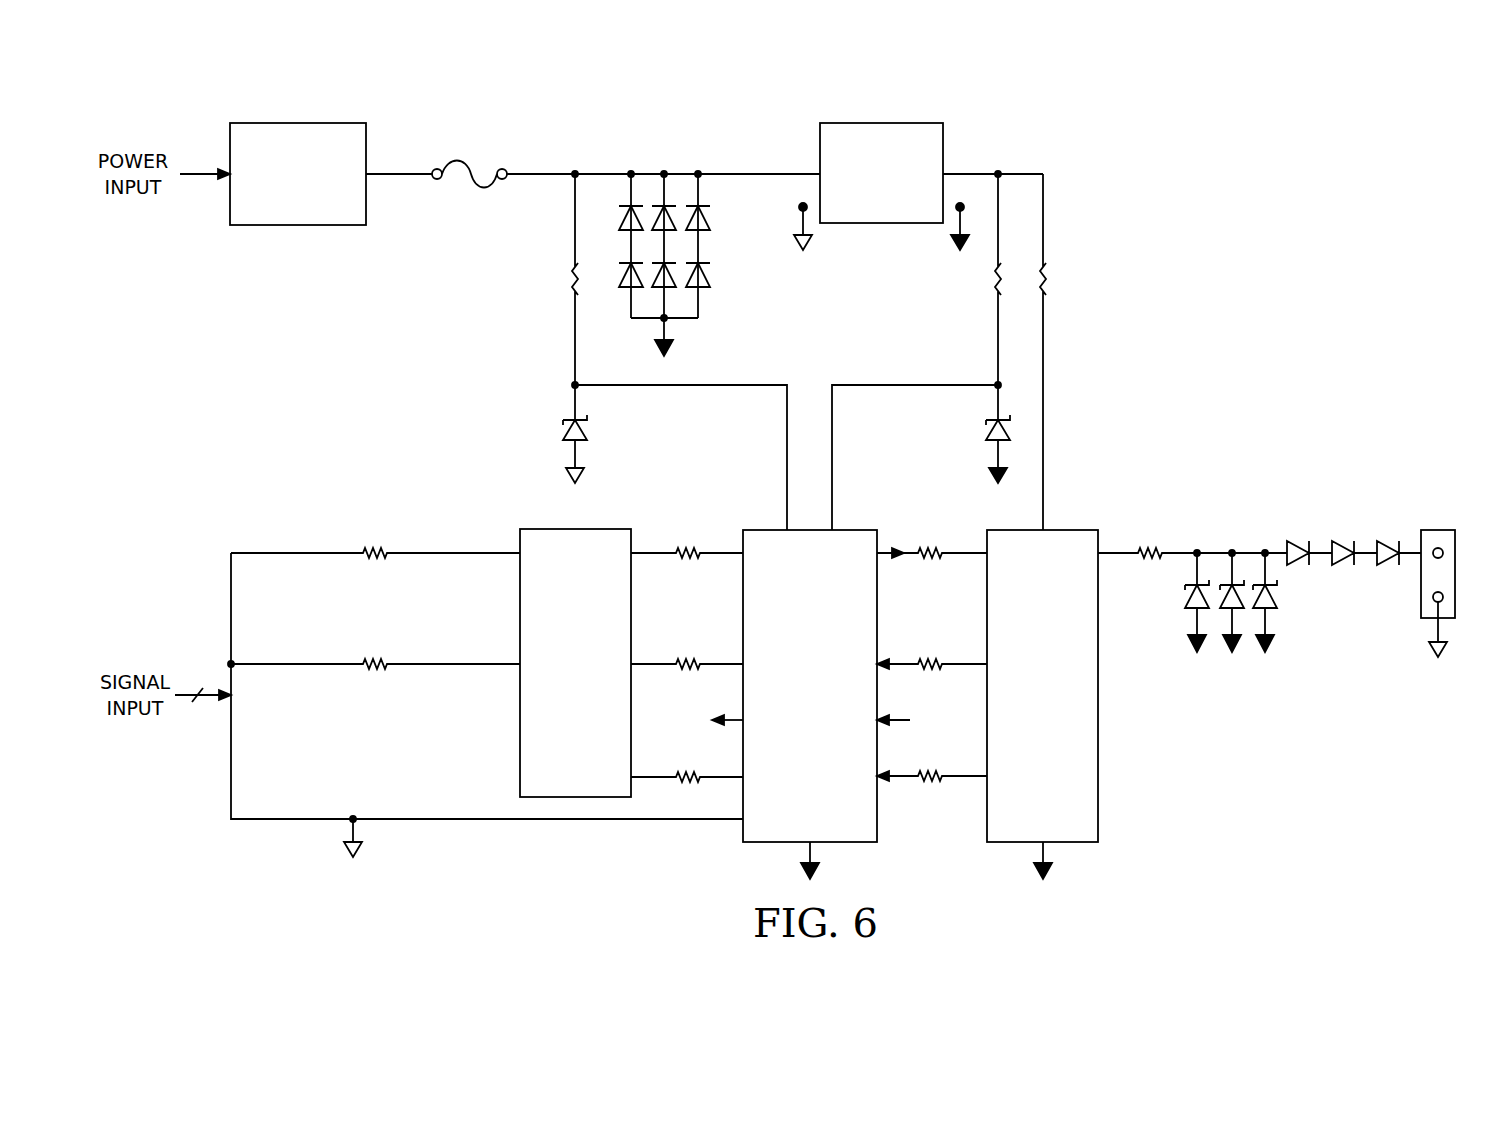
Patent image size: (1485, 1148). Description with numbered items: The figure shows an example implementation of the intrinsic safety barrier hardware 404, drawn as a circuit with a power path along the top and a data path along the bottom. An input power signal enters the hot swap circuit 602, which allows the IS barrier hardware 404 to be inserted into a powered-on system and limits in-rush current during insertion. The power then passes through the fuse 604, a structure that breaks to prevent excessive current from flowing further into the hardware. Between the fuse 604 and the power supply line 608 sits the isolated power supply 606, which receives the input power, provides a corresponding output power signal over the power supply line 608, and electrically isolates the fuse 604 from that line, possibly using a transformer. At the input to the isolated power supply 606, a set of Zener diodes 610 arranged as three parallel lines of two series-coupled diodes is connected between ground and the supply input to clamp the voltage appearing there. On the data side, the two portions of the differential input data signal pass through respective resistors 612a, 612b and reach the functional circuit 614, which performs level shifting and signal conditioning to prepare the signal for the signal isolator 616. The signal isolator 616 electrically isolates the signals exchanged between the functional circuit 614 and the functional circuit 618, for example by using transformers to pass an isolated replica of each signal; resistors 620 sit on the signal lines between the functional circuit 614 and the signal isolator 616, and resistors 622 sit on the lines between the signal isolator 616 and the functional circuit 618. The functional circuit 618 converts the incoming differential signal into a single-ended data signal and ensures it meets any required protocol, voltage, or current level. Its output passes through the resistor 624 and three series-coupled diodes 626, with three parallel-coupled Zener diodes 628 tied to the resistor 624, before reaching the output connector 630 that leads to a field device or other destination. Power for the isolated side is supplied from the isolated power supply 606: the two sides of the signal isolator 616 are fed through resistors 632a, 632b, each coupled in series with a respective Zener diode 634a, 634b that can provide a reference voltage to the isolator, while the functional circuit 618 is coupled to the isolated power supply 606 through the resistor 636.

The IS barrier hardware 404 is at (1312, 122).
The hot swap circuit 602 is at (300, 123).
The fuse 604 is at (461, 164).
The isolated power supply 606 is at (880, 123).
The power supply line 608 is at (1018, 174).
The Zener diodes 610 is at (708, 280).
The resistor 612a is at (376, 547).
The resistor 612b is at (373, 672).
The functional circuit 614 is at (575, 663).
The signal isolator 616 is at (810, 704).
The functional circuit 618 is at (1042, 704).
The resistors 620 is at (687, 547).
The resistors 622 is at (936, 547).
The resistor 624 is at (1153, 547).
The diodes 626 is at (1298, 547).
The Zener diodes 628 is at (1190, 596).
The output connector 630 is at (1438, 530).
The resistor 632a is at (571, 284).
The resistor 632b is at (993, 278).
The Zener diode 634a is at (569, 432).
The Zener diode 634b is at (992, 432).
The resistor 636 is at (1048, 284).